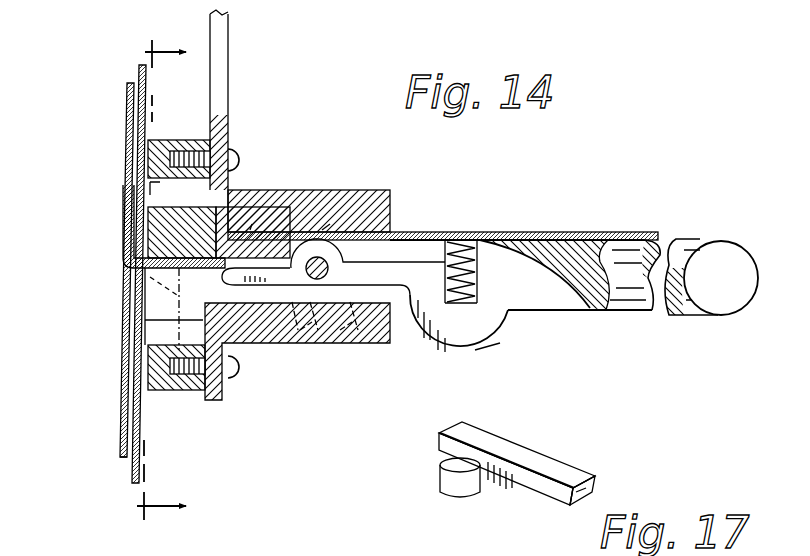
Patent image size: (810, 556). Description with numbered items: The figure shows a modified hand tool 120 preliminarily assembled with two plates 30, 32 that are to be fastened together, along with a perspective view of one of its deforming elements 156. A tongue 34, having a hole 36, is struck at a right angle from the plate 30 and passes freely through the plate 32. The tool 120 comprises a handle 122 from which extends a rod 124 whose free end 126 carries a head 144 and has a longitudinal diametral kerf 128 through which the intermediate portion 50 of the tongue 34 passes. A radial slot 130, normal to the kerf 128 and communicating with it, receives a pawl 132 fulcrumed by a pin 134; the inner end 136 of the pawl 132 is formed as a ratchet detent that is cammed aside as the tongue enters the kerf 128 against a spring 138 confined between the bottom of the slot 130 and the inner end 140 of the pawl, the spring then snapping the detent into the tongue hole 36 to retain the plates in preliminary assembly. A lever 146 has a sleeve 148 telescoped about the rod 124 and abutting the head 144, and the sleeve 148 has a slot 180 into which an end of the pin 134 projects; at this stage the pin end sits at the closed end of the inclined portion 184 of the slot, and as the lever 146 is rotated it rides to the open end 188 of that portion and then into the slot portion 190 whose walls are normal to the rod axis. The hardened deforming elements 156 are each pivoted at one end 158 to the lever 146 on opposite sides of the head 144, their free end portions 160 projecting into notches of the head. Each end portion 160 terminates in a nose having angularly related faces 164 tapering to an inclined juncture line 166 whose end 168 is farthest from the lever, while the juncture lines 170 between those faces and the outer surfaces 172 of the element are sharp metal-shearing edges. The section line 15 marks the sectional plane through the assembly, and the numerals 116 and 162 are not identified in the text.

In FIG. 14, the section line 15- 15 is at (164, 275).
In FIG. 14, the plate 30 is at (128, 106).
In FIG. 14, the plate 32 is at (148, 104).
In FIG. 14, the tongue 34 is at (333, 259).
In FIG. 14, the hole 36 is at (247, 232).
In FIG. 14, the intermediate portion of the tongue 50 is at (133, 276).
In FIG. 14, the lower panel 116 is at (136, 290).
In FIG. 14, the hand tool 120 is at (636, 226).
In FIG. 14, the handle 122 is at (718, 256).
In FIG. 14, the rod 124 is at (614, 240).
In FIG. 14, the free end of the rod 126 is at (150, 218).
In FIG. 14, the kerf 128 is at (292, 230).
In FIG. 14, the radial slot 130 is at (525, 313).
In FIG. 14, the pawl 132 is at (438, 354).
In FIG. 14, the pin 134 is at (343, 217).
In FIG. 14, the inner end of the pawl 136 is at (250, 217).
In FIG. 14, the spring 138 is at (482, 262).
In FIG. 14, the inner end of the pawl 140 is at (497, 350).
In FIG. 14, the head 144 is at (126, 203).
In FIG. 14, the lever 146 is at (232, 60).
In FIG. 14, the sleeve 148 is at (392, 193).
In FIG. 14, the deforming element 156 is at (168, 140).
In FIG. 17, the deforming element 156 is at (497, 437).
In FIG. 14, the pivot 158 is at (232, 152).
In FIG. 17, the free end portion 160 is at (565, 478).
In FIG. 14, the rib 162 is at (135, 232).
In FIG. 17, the angularly related faces 164 is at (580, 502).
In FIG. 17, the inclined juncture line 166 is at (591, 496).
In FIG. 14, the end of the juncture line 168 is at (150, 241).
In FIG. 17, the end of the juncture line 168 is at (589, 486).
In FIG. 14, the juncture lines 170 is at (150, 183).
In FIG. 17, the juncture lines 170 is at (592, 479).
In FIG. 17, the outer surface 172 is at (520, 447).
In FIG. 14, the slot 180 is at (290, 336).
In FIG. 14, the inclined portion of the slot 184 is at (334, 263).
In FIG. 14, the open end of the slot portion 188 is at (336, 284).
In FIG. 14, the slot portion 190 is at (356, 342).